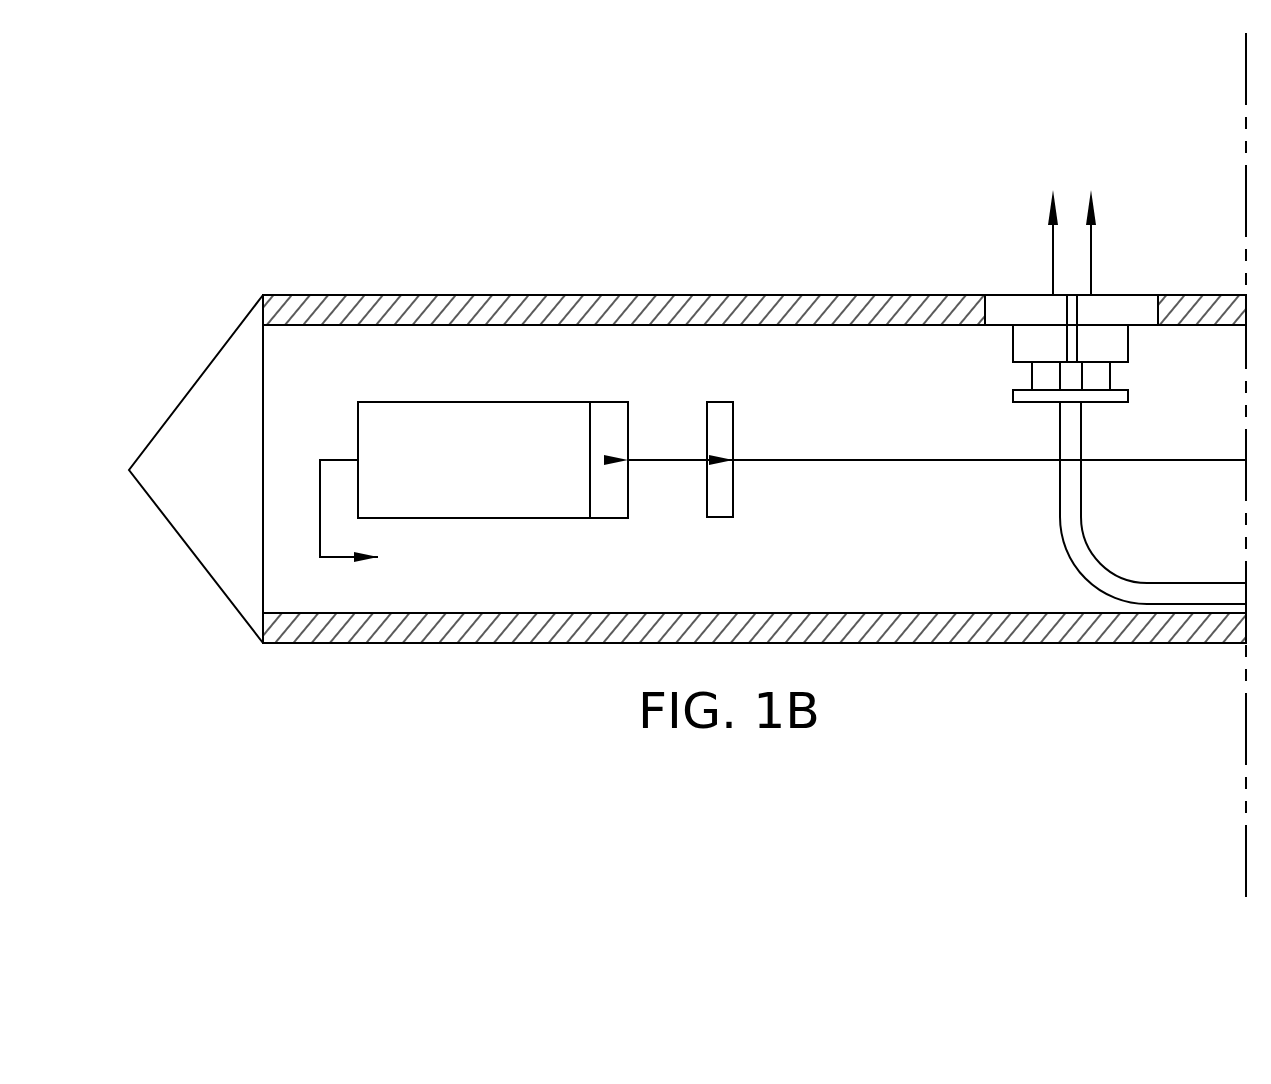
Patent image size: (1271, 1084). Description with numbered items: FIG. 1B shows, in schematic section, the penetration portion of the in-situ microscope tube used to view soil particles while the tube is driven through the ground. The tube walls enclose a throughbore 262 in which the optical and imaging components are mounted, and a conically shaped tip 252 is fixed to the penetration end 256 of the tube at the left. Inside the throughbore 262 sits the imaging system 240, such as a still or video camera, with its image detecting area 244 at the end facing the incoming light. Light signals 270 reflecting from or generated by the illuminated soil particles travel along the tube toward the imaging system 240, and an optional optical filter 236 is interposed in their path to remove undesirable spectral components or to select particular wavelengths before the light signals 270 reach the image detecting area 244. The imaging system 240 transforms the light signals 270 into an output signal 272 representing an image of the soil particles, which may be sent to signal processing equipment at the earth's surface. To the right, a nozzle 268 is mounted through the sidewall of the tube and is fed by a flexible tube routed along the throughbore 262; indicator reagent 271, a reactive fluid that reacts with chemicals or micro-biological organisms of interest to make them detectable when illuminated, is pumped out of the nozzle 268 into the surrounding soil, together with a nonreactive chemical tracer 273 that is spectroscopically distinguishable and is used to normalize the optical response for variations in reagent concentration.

The conically shaped tip 252 is at (202, 403).
The penetration end 256 is at (260, 632).
The imaging system 240 is at (475, 402).
The image detecting area 244 is at (607, 412).
The output signal 272 is at (330, 460).
The optical filter 236 is at (733, 511).
The light signals 270 is at (783, 458).
The throughbore 262 is at (972, 560).
The nozzle 268 is at (1123, 307).
The indicator reagent 271 is at (1053, 250).
The chemical tracer 273 is at (1091, 240).